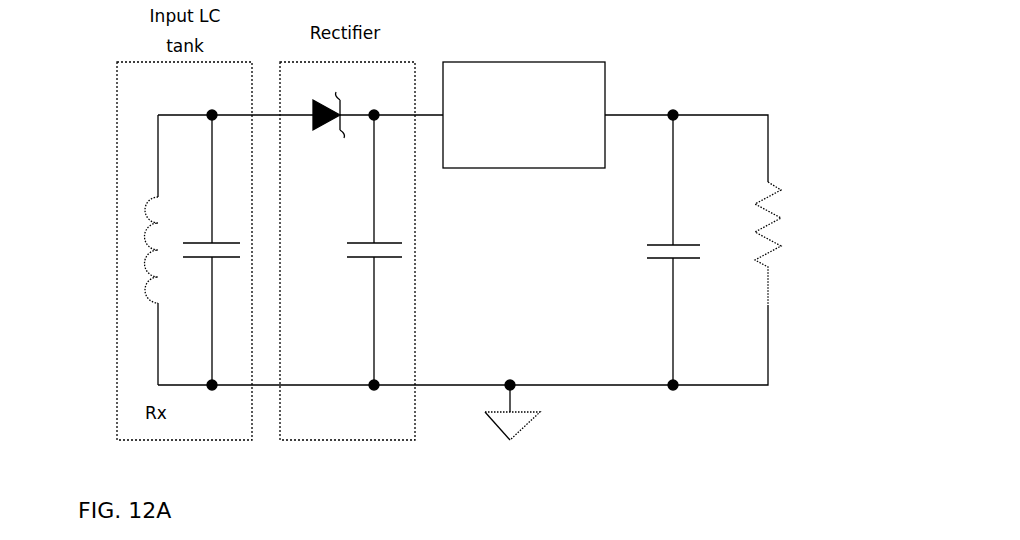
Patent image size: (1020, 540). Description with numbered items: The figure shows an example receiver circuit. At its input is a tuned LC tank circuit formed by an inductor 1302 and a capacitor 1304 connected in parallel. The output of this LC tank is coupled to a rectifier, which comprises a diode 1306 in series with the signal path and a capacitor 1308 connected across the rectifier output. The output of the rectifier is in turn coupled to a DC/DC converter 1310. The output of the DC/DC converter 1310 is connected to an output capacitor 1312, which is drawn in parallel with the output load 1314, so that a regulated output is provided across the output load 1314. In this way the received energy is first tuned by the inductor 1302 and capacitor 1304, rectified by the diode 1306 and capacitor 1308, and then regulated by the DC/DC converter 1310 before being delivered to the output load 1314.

The inductor 1302 is at (146, 230).
The capacitor 1304 is at (196, 232).
The diode 1306 is at (330, 133).
The capacitor 1308 is at (340, 243).
The DC/DC converter 1310 is at (583, 62).
The output capacitor 1312 is at (667, 230).
The output load 1314 is at (787, 195).